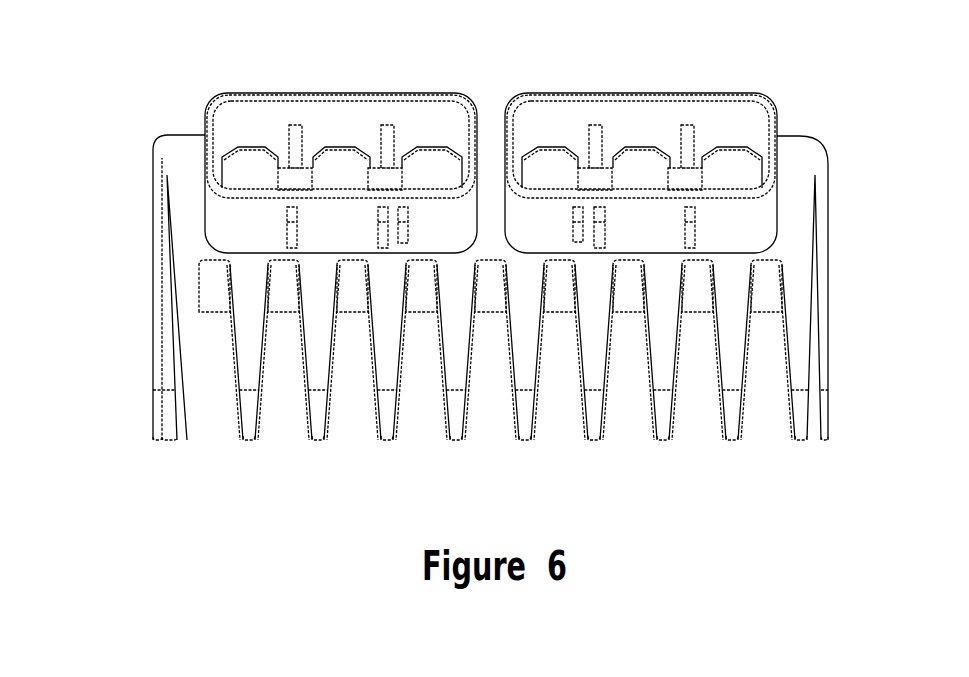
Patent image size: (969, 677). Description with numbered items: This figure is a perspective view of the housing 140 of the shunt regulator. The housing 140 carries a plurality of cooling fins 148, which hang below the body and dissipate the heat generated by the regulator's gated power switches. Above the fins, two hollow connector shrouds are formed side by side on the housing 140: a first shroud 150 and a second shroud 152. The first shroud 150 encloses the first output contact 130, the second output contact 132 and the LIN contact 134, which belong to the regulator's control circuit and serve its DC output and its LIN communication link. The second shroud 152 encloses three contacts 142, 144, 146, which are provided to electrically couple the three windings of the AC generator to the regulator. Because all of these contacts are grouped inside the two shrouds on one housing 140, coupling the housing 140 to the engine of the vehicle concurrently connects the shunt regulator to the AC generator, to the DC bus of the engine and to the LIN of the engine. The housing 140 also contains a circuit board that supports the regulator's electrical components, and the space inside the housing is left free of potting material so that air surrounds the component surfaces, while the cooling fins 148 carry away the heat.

The housing 140 is at (153, 182).
The cooling fins 148 is at (178, 348).
The first shroud 150 is at (203, 125).
The second shroud 152 is at (779, 127).
The first output contact 130 is at (425, 147).
The second output contact 132 is at (248, 147).
The LIN contact 134 is at (337, 147).
The contact 142 is at (548, 147).
The contact 144 is at (637, 147).
The contact 146 is at (727, 147).